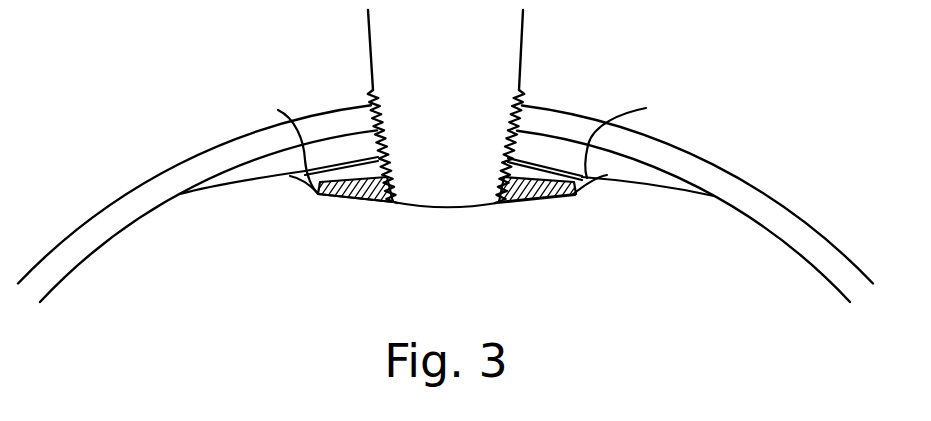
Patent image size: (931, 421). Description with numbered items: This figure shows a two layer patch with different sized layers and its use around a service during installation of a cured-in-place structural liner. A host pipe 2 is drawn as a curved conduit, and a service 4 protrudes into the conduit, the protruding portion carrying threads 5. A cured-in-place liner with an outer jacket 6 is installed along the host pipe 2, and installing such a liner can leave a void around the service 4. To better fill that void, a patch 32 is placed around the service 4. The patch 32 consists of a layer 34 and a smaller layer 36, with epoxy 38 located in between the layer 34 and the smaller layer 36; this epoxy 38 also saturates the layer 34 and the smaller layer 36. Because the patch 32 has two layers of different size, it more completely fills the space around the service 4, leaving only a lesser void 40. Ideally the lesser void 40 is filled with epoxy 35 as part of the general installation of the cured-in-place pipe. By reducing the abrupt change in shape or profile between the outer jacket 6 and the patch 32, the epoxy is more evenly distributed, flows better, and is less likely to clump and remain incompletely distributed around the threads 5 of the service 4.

The host pipe 2 is at (764, 194).
The service 4 is at (519, 56).
The threads 5 is at (515, 116).
The outer jacket 6 is at (143, 216).
The patch 32 is at (332, 242).
The layer 34 is at (295, 181).
The epoxy 35 is at (517, 207).
The smaller layer 36 is at (328, 181).
The epoxy 38 is at (347, 170).
The lesser void 40 is at (263, 161).